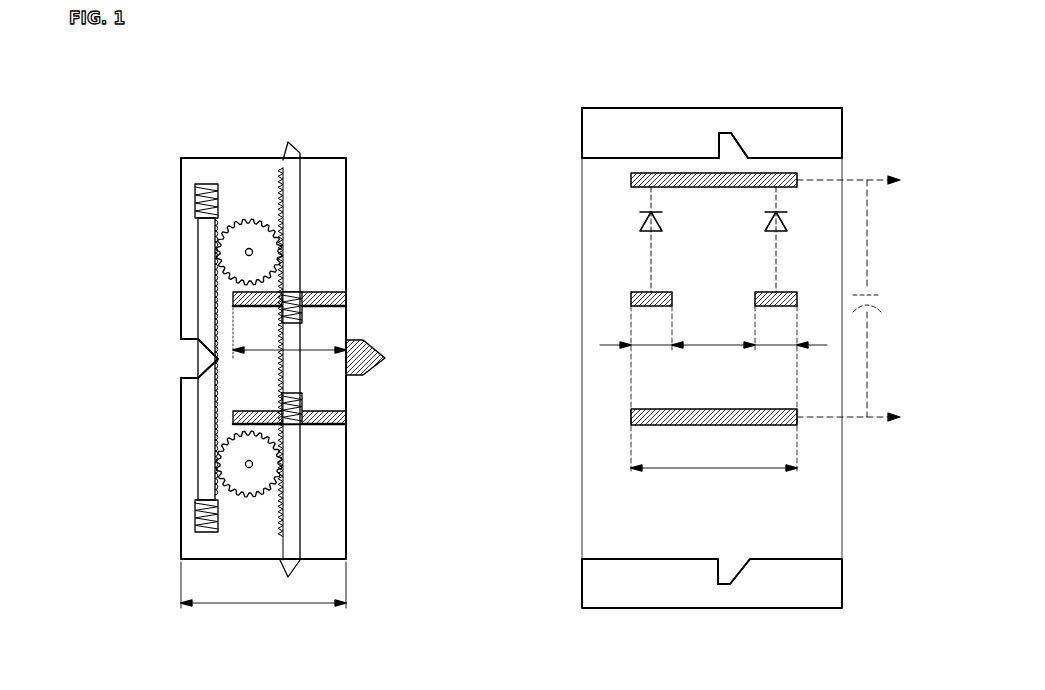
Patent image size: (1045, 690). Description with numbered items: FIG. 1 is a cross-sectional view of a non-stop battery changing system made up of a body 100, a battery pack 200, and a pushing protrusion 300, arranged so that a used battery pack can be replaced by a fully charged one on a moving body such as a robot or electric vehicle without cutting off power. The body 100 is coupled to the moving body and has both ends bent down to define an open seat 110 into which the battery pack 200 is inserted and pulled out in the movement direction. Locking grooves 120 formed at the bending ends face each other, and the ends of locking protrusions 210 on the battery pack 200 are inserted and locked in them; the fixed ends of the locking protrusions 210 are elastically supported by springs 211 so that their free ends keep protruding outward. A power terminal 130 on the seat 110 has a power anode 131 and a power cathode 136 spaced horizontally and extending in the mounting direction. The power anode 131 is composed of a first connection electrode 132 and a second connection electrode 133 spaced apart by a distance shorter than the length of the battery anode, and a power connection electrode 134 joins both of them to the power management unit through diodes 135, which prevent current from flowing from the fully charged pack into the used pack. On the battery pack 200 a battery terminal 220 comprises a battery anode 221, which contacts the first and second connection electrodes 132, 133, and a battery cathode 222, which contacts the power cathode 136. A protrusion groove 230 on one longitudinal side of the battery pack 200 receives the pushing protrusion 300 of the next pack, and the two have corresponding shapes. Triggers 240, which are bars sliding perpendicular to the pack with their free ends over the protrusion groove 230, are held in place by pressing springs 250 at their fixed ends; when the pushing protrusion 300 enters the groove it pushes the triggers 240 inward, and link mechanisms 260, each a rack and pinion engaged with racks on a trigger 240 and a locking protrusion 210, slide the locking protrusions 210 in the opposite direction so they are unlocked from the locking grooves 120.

The body 100 is at (712, 368).
The seat 110 is at (610, 535).
The locking grooves 120 is at (722, 138).
The power terminal 130 is at (465, 242).
The power anode 131 is at (519, 178).
The first connection electrode 132 is at (767, 292).
The second connection electrode 133 is at (631, 293).
The power connection electrode 134 is at (631, 177).
The diodes 135 is at (766, 222).
The power cathode 136 is at (631, 412).
The battery pack 200 is at (232, 566).
The locking protrusions 210 is at (300, 185).
The springs 211 is at (293, 300).
The battery terminal 220 is at (111, 265).
The battery anode 221 is at (248, 290).
The battery cathode 222 is at (253, 410).
The protrusion groove 230 is at (186, 354).
The triggers 240 is at (205, 238).
The pressing springs 250 is at (207, 190).
The link mechanisms 260 is at (249, 224).
The pushing protrusion 300 is at (370, 341).